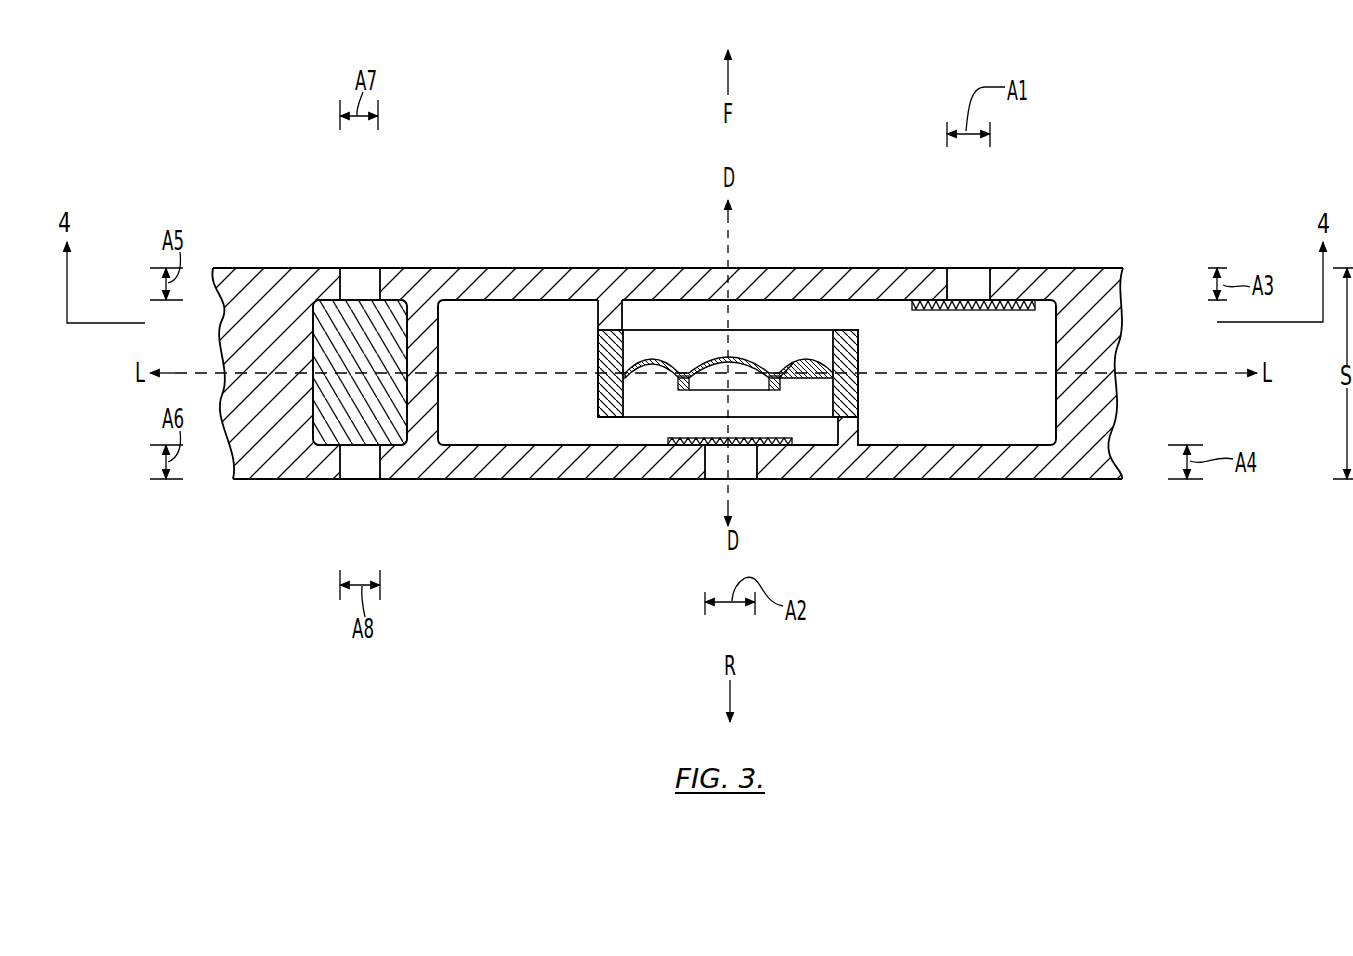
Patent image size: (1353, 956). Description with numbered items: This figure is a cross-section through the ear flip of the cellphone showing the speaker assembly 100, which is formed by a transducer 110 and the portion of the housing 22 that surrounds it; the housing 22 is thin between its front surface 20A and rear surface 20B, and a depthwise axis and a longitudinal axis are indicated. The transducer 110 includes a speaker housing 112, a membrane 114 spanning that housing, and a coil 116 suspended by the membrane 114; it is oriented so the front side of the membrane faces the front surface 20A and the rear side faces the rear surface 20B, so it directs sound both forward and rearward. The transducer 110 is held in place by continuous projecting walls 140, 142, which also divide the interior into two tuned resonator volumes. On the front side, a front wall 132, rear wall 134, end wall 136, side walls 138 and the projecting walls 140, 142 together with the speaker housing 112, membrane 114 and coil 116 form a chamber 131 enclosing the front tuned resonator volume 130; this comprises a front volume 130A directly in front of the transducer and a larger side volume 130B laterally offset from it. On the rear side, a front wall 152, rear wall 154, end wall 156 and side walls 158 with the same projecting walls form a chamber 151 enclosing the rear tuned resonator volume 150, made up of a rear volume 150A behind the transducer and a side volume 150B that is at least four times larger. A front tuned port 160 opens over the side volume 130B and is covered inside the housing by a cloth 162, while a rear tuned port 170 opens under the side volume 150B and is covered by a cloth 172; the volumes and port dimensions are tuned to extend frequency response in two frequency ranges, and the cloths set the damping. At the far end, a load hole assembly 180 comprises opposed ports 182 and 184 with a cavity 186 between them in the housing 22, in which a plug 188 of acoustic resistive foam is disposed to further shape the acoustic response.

The front surface 20A is at (569, 268).
The rear surface 20B is at (553, 480).
The housing 22 is at (238, 268).
The speaker assembly 100 is at (795, 112).
The transducer 110 is at (860, 356).
The housing 112 is at (598, 414).
The membrane 114 is at (660, 358).
The coil 116 is at (700, 372).
The front tuned resonator volume 130 is at (1000, 346).
The front volume 130A is at (825, 313).
The side volume 130B is at (924, 414).
The chamber 131 is at (1064, 413).
The front wall 132 is at (790, 310).
The rear wall 134 is at (956, 447).
The end wall 136 is at (1055, 322).
The side walls 138 is at (1007, 445).
The projecting wall 140 is at (603, 312).
The projecting wall 142 is at (847, 443).
The rear tuned resonator volume 150 is at (517, 336).
The rear volume 150A is at (657, 432).
The side volume 150B is at (453, 426).
The chamber 151 is at (433, 419).
The front wall 152 is at (515, 302).
The rear wall 154 is at (545, 445).
The end wall 156 is at (439, 318).
The side walls 158 is at (470, 432).
The front tuned port 160 is at (978, 274).
The cloth 162 is at (965, 300).
The rear tuned port 170 is at (750, 478).
The cloth 172 is at (773, 445).
The load hole assembly 180 is at (414, 197).
The port 182 is at (370, 290).
The port 184 is at (363, 467).
The cavity 186 is at (314, 303).
The plug 188 is at (383, 332).